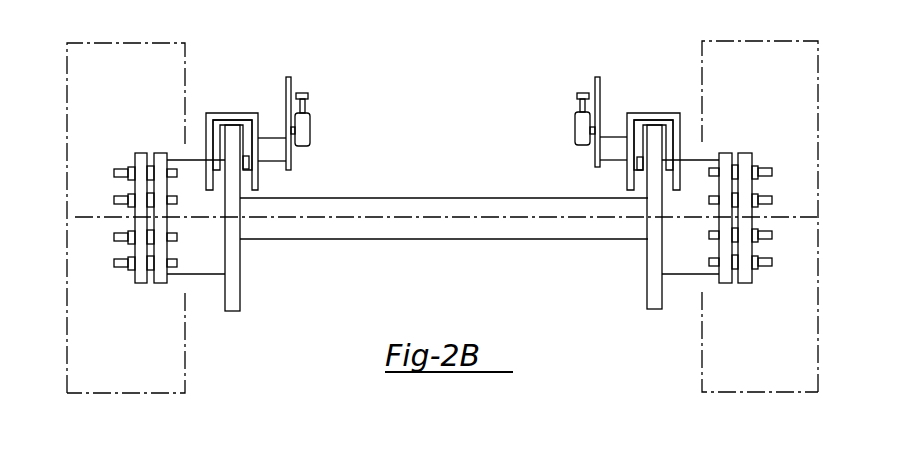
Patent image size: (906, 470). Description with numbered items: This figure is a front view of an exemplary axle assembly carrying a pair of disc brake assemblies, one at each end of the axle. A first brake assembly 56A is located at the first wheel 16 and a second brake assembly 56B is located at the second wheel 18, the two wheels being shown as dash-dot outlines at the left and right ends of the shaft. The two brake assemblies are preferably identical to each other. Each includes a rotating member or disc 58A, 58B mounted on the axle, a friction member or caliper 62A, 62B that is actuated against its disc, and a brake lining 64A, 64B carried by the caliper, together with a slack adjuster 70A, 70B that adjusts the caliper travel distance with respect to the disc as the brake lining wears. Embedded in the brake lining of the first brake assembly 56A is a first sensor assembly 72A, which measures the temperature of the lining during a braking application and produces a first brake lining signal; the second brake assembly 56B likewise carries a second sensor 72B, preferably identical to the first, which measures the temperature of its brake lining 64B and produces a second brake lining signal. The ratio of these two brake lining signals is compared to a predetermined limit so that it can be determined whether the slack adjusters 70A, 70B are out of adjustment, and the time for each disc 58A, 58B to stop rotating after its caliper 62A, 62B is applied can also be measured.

The first wheel 16 is at (103, 383).
The second wheel 18 is at (768, 383).
The first brake assembly 56A is at (246, 103).
The second brake assembly 56B is at (599, 108).
The disc 58A is at (240, 295).
The disc 58B is at (648, 282).
The caliper 62A is at (225, 113).
The caliper 62B is at (679, 113).
The brake lining 64A is at (206, 128).
The brake lining 64B is at (627, 124).
The slack adjuster 70A is at (310, 130).
The slack adjuster 70B is at (576, 128).
The first sensor assembly 72A is at (249, 162).
The second sensor 72B is at (637, 163).